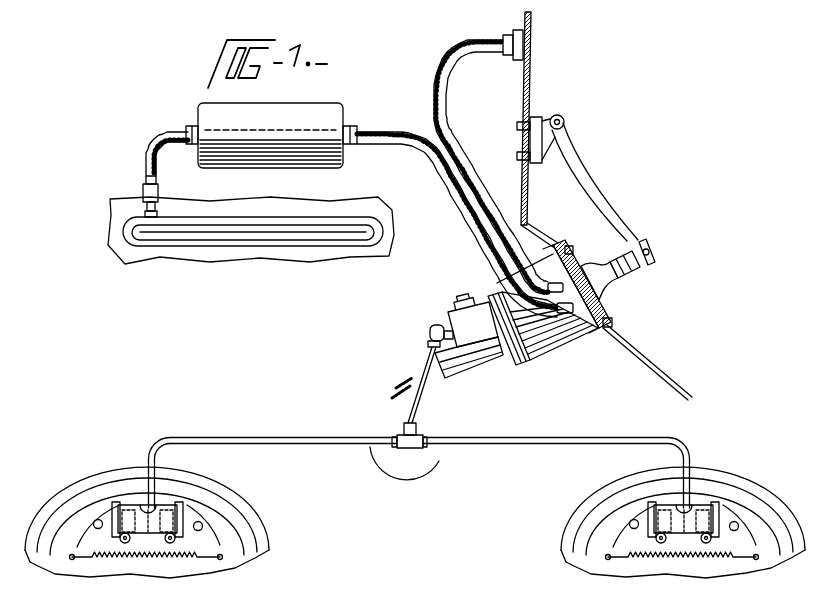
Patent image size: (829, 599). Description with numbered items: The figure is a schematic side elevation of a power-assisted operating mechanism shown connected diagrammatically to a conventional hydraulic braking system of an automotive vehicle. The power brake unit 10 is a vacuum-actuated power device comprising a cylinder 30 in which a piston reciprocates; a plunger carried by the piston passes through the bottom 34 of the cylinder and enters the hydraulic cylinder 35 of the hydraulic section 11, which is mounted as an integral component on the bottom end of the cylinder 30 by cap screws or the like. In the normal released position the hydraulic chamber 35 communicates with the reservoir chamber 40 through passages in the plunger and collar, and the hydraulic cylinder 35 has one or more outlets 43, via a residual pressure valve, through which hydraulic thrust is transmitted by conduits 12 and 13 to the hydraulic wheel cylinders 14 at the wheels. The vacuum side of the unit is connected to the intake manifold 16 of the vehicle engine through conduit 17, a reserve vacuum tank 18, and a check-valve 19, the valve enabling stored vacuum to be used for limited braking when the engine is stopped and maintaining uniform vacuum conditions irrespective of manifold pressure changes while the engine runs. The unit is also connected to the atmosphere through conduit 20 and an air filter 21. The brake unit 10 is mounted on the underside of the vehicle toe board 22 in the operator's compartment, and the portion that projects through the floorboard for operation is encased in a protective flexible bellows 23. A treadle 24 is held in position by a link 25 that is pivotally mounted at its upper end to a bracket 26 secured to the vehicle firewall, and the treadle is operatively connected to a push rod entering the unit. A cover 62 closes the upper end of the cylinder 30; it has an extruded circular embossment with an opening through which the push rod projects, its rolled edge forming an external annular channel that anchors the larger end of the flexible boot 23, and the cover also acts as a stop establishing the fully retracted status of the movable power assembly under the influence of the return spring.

The power brake unit 10 is at (545, 315).
The hydraulic section 11 is at (440, 341).
The conduit 12 is at (404, 413).
The conduit 13 is at (431, 467).
The hydraulic wheel cylinders 14 is at (186, 501).
The intake manifold 16 is at (243, 237).
The conduit 17 is at (378, 116).
The reserve vacuum tank 18 is at (270, 113).
The check-valve 19 is at (143, 192).
The conduit 20 is at (462, 52).
The air filter 21 is at (520, 43).
The vehicle toe board 22 is at (663, 369).
The protective flexible bellows 23 is at (617, 280).
The treadle 24 is at (651, 238).
The link 25 is at (593, 200).
The bracket 26 is at (545, 118).
The cylinder 30 is at (566, 336).
The bottom of the cylinder 34 is at (513, 364).
The hydraulic cylinder 35 is at (472, 372).
The reservoir chamber 40 is at (475, 327).
The outlets 43 is at (445, 318).
The cover 62 is at (570, 260).